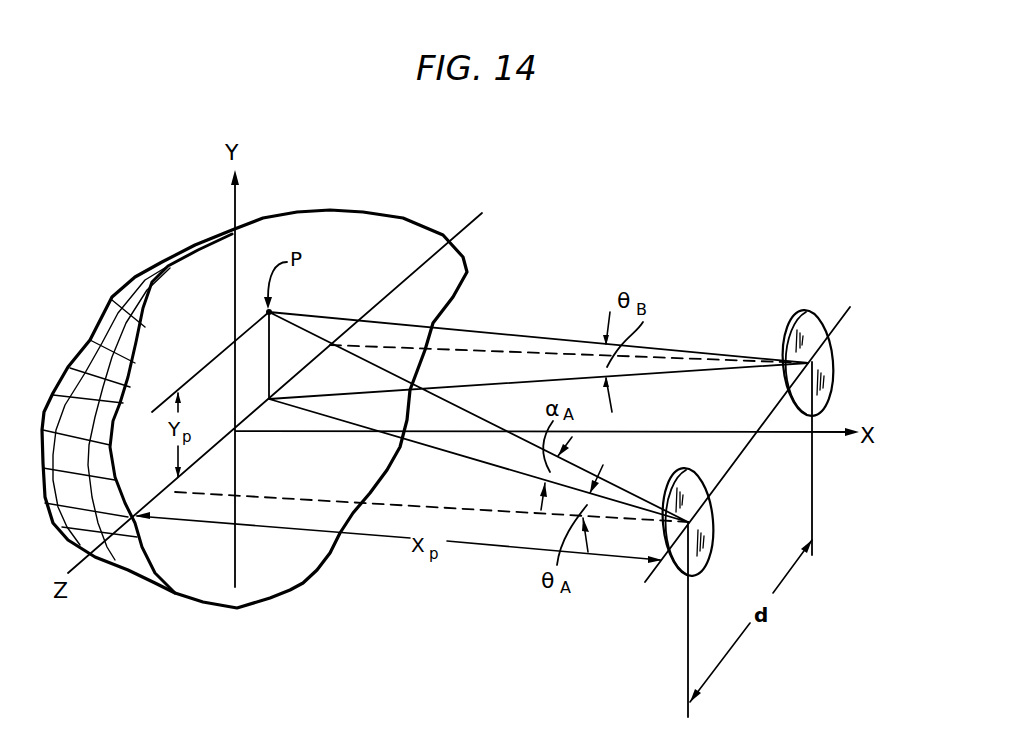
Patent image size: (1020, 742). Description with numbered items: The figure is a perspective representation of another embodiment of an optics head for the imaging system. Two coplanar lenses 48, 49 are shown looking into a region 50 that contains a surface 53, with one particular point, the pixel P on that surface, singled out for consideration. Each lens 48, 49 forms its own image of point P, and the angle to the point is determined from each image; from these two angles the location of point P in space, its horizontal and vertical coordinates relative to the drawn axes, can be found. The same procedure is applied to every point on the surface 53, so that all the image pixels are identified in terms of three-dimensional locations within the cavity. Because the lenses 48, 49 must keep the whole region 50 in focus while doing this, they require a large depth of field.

The coplanar lens 48 is at (675, 573).
The coplanar lens 49 is at (803, 312).
The region 50 is at (298, 604).
The surface 53 is at (166, 246).